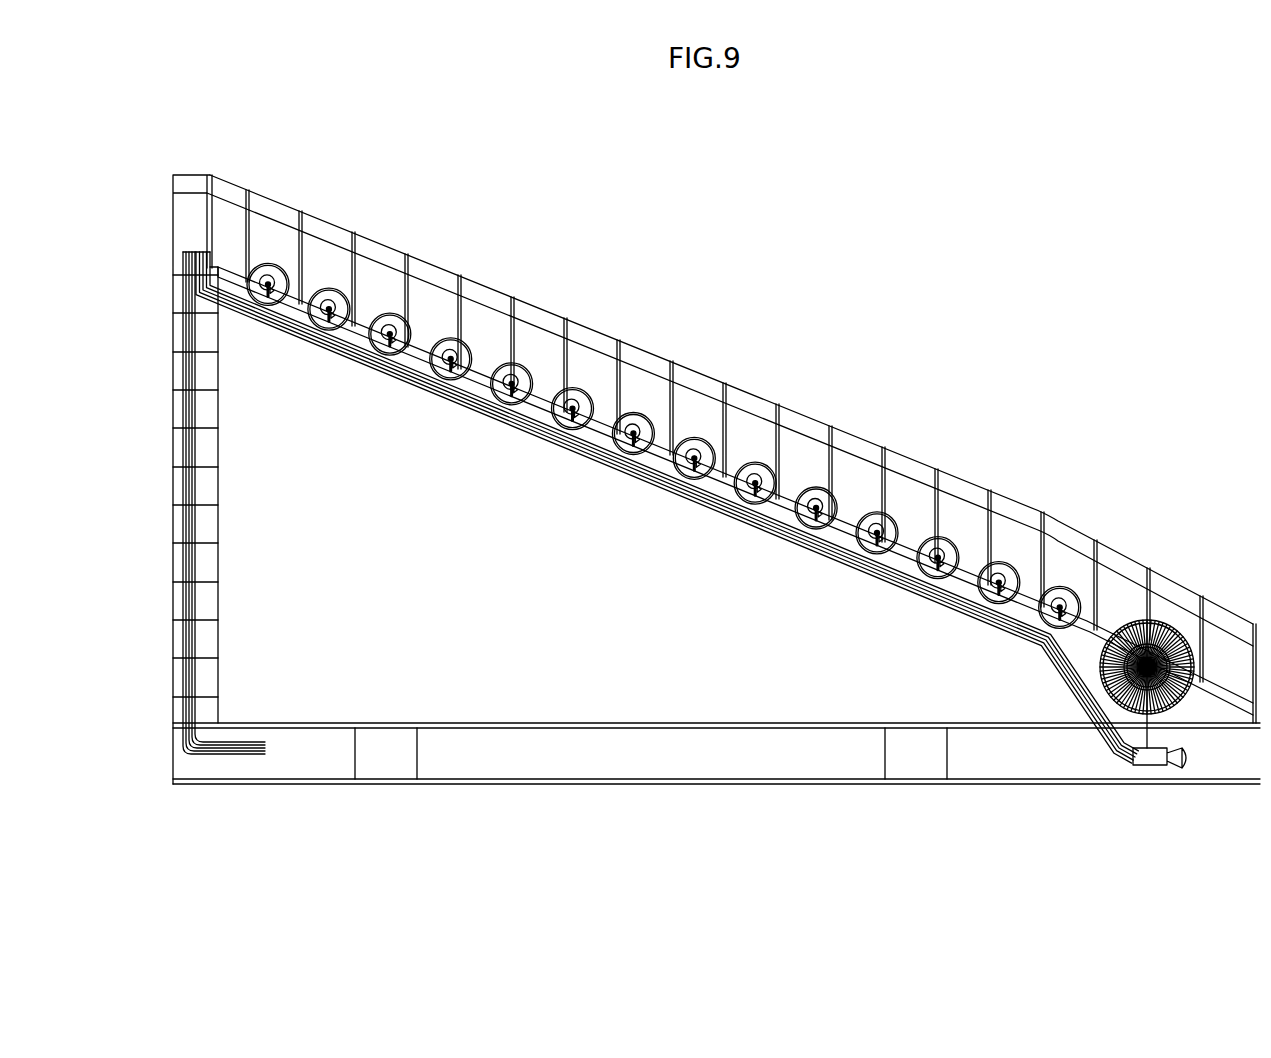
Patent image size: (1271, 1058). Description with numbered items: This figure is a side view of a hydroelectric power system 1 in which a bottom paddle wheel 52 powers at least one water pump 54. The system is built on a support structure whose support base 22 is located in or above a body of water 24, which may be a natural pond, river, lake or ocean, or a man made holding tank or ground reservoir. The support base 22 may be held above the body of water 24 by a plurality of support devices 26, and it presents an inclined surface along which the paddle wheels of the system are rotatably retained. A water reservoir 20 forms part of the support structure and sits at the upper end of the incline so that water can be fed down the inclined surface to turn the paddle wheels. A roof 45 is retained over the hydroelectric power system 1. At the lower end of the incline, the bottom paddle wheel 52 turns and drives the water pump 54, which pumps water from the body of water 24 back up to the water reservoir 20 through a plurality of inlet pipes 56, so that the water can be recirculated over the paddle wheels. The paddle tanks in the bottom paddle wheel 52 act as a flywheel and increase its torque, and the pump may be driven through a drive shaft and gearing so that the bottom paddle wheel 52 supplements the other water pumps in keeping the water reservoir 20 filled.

The hydroelectric power system 1 is at (963, 452).
The water reservoir 20 is at (210, 262).
The support base 22 is at (622, 621).
The body of water 24 is at (631, 763).
The support devices 26 is at (399, 763).
The roof 45 is at (847, 433).
The bottom paddle wheel 52 is at (1126, 615).
The water pump 54 is at (1143, 757).
The inlet pipes 56 is at (752, 523).